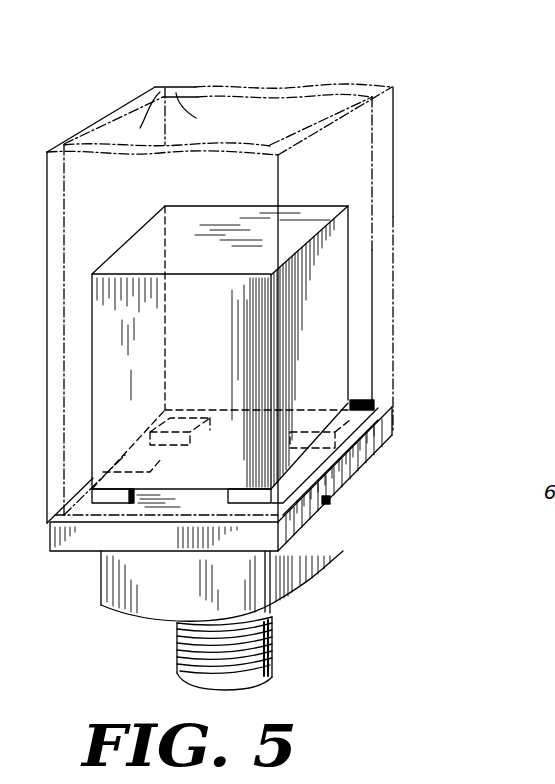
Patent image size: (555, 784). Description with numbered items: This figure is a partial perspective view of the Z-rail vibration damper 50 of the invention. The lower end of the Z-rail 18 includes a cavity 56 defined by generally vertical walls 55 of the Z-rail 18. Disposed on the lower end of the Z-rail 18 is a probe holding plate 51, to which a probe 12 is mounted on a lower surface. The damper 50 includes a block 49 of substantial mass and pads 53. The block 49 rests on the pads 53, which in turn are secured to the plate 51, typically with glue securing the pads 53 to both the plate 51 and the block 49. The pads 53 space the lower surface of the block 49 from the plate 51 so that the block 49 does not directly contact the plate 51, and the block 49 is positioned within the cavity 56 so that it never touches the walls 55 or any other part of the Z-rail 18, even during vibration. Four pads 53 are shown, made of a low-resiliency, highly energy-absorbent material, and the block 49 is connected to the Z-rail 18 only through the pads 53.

The probe 12 is at (272, 652).
The Z-rail 18 is at (412, 171).
The block 49 is at (331, 314).
The Z-rail vibration damper 50 is at (362, 472).
The probe holding plate 51 is at (388, 443).
The pads 53 is at (150, 480).
The vertical walls 55 is at (179, 92).
The cavity 56 is at (255, 131).